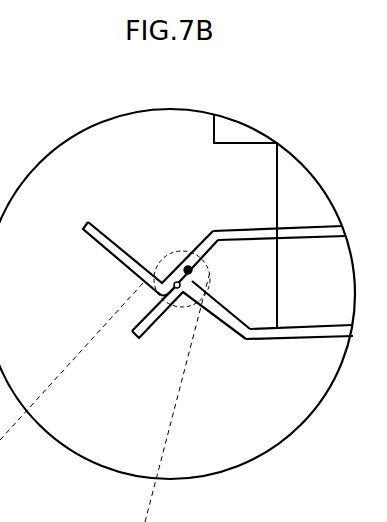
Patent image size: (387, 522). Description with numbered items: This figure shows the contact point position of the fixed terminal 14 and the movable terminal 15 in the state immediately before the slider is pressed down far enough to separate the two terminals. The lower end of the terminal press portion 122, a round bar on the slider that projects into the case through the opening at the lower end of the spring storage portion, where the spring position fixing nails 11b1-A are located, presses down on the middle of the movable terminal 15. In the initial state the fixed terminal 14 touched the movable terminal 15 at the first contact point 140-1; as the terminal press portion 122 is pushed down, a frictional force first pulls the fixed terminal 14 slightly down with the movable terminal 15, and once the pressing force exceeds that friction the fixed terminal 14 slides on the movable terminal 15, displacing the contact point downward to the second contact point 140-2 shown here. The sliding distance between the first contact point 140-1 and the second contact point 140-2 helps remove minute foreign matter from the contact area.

The spring position fixing nails 11b1-A is at (238, 128).
The terminal press portion 122 is at (315, 210).
The fixed terminal 14 is at (298, 238).
The movable terminal 15 is at (280, 342).
The second contact point 140-2 is at (170, 277).
The first contact point 140-1 is at (195, 290).